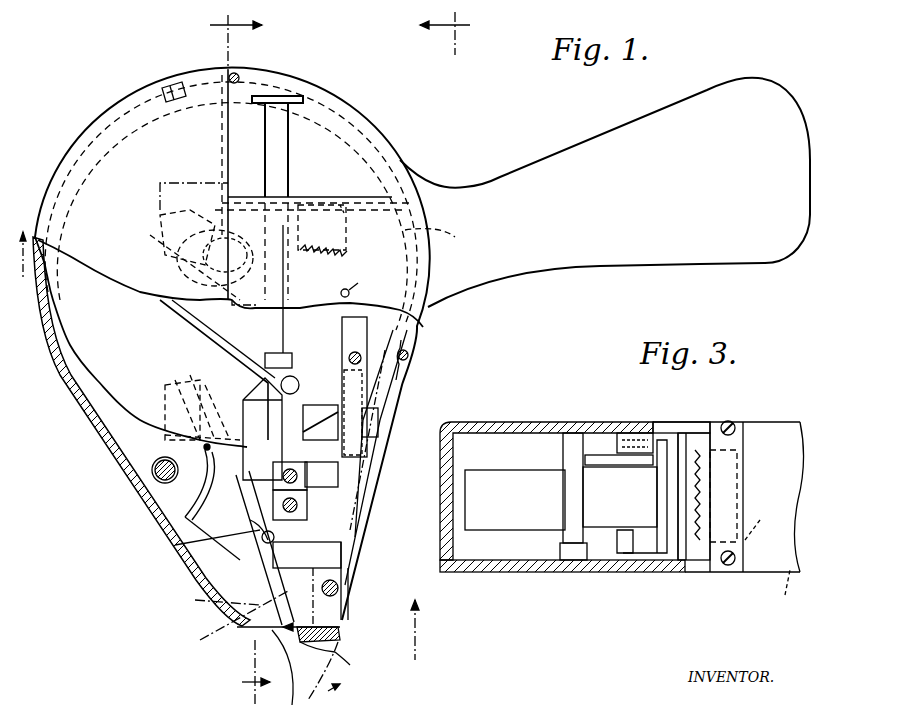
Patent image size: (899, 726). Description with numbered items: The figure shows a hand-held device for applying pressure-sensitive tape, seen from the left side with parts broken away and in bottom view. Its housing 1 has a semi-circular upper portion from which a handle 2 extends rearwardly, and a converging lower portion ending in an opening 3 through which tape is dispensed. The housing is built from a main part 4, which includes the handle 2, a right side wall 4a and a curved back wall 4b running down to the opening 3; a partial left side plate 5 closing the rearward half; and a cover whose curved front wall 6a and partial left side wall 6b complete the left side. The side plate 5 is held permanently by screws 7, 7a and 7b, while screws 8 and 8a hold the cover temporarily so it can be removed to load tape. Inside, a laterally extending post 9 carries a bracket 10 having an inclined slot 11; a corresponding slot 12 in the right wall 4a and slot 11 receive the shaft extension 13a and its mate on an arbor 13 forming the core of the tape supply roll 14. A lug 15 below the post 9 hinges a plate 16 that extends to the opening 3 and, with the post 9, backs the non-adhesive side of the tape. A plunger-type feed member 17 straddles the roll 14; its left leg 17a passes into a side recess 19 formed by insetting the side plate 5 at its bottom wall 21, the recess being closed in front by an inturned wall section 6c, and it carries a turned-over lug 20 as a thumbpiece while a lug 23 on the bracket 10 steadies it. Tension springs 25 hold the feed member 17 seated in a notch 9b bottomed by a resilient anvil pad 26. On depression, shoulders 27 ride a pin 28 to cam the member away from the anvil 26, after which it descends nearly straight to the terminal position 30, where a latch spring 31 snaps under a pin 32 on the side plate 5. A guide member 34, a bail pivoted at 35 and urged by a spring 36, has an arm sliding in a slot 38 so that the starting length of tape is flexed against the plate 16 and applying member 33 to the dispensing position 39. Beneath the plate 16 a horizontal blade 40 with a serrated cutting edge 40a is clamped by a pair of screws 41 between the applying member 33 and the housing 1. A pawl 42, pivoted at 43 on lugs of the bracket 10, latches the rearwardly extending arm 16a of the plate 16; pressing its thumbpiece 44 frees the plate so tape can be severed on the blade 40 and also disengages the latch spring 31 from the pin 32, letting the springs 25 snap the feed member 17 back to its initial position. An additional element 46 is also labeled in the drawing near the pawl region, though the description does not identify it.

In FIG. 1, the housing 1 is at (382, 108).
In FIG. 1, the handle 2 is at (648, 265).
In FIG. 1, the opening 3 is at (219, 451).
In FIG. 3, the opening 3 is at (672, 422).
In FIG. 1, the main part 4 is at (246, 352).
In FIG. 3, the right side wall 4a is at (540, 575).
In FIG. 1, the curved back wall 4b is at (380, 470).
In FIG. 3, the curved back wall 4b is at (795, 593).
In FIG. 1, the partial left side plate 5 is at (389, 353).
In FIG. 3, the partial left side plate 5 is at (760, 422).
In FIG. 1, the curved front wall 6a is at (92, 425).
In FIG. 1, the partial left side wall 6b is at (95, 272).
In FIG. 3, the partial left side wall 6b is at (505, 422).
In FIG. 1, the inturned wall section 6c is at (222, 140).
In FIG. 1, the screw 7 is at (360, 597).
In FIG. 1, the screw 7a is at (410, 358).
In FIG. 1, the screw 7b is at (240, 75).
In FIG. 1, the screw 8 is at (150, 480).
In FIG. 1, the screw 8a is at (170, 84).
In FIG. 1, the post 9 is at (312, 470).
In FIG. 1, the notch 9b is at (290, 480).
In FIG. 1, the bracket 10 is at (242, 330).
In FIG. 3, the bracket 10 is at (595, 455).
In FIG. 1, the slot 11 is at (158, 225).
In FIG. 1, the slot 12 is at (185, 262).
In FIG. 1, the arbor 13 is at (200, 305).
In FIG. 1, the shaft extension 13a is at (181, 281).
In FIG. 1, the tape supply roll 14 is at (68, 375).
In FIG. 3, the tape supply roll 14 is at (510, 532).
In FIG. 1, the lug 15 is at (307, 584).
In FIG. 1, the plate 16 is at (262, 568).
In FIG. 3, the plate 16 is at (690, 430).
In FIG. 1, the rearwardly extending arm 16a is at (355, 560).
In FIG. 1, the feed member 17 is at (240, 530).
In FIG. 1, the left leg 17a is at (285, 162).
In FIG. 1, the side recess 19 is at (320, 122).
In FIG. 1, the turned-over lug 20 is at (300, 96).
In FIG. 1, the bottom wall of recess 21 is at (442, 234).
In FIG. 1, the lug 23 is at (288, 355).
In FIG. 1, the tension springs 25 is at (308, 225).
In FIG. 1, the resilient pad 26 is at (282, 520).
In FIG. 1, the shoulders 27 is at (258, 318).
In FIG. 1, the pin 28 is at (299, 387).
In FIG. 1, the terminal position 30 is at (200, 640).
In FIG. 1, the latch spring 31 is at (346, 232).
In FIG. 1, the pin 32 is at (362, 286).
In FIG. 1, the applying member 33 is at (364, 659).
In FIG. 3, the applying member 33 is at (752, 455).
In FIG. 1, the guide member 34 is at (195, 602).
In FIG. 3, the guide member 34 is at (640, 575).
In FIG. 1, the pivot 35 is at (198, 452).
In FIG. 1, the spring 36 is at (250, 540).
In FIG. 3, the spring 36 is at (640, 432).
In FIG. 1, the slot 38 is at (180, 520).
In FIG. 1, the dispensing position 39 is at (316, 712).
In FIG. 1, the blade 40 is at (342, 618).
In FIG. 3, the blade 40 is at (768, 512).
In FIG. 3, the cutting edge 40a is at (700, 545).
In FIG. 3, the screws 41 is at (730, 422).
In FIG. 1, the pawl 42 is at (368, 495).
In FIG. 1, the pivot 43 is at (405, 422).
In FIG. 1, the thumbpiece 44 is at (357, 355).
In FIG. 1, the pawl 46 is at (284, 445).